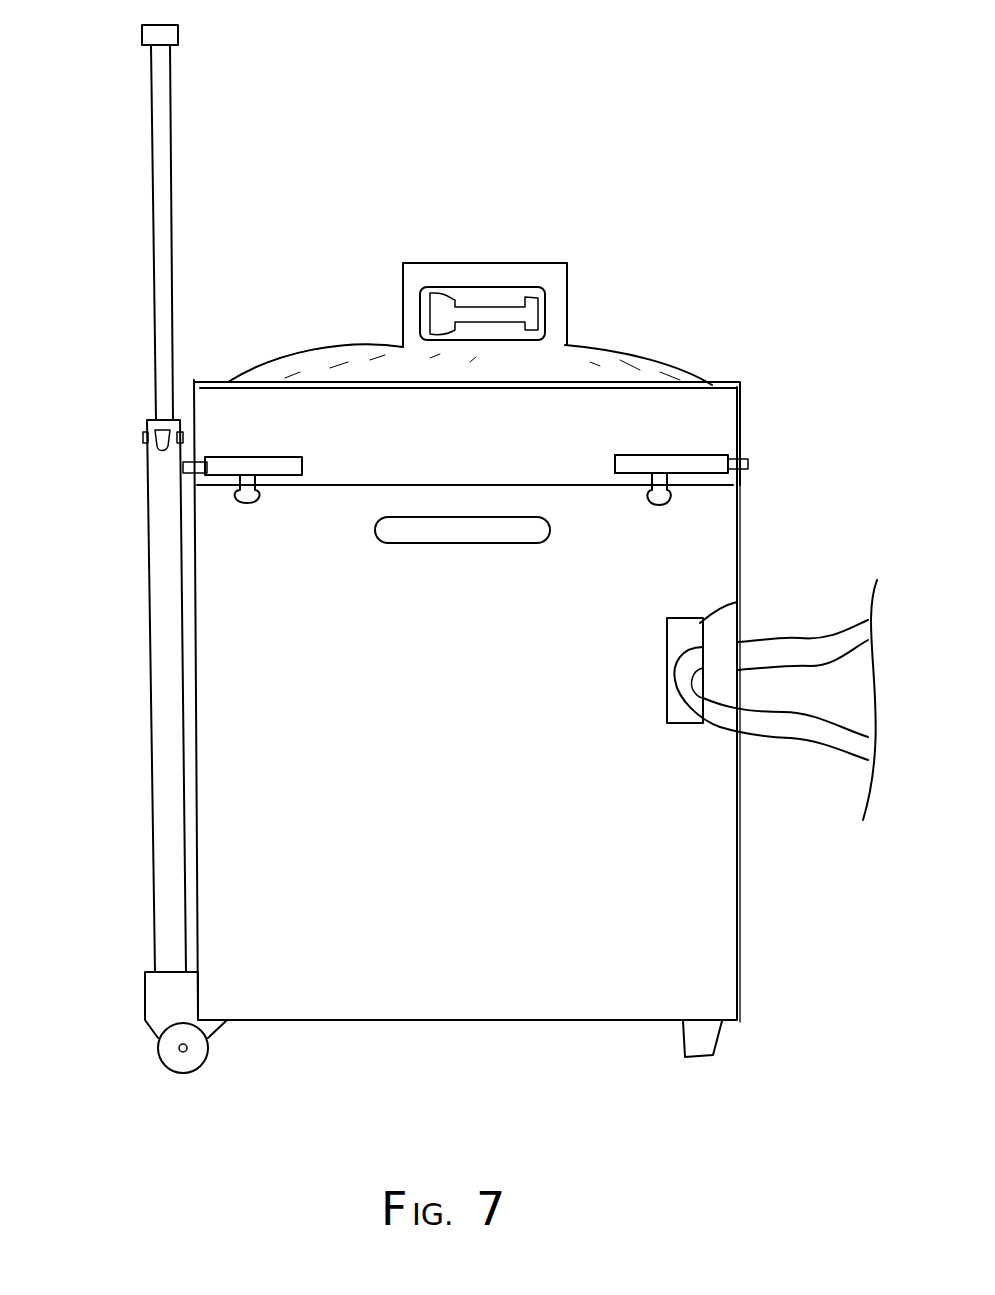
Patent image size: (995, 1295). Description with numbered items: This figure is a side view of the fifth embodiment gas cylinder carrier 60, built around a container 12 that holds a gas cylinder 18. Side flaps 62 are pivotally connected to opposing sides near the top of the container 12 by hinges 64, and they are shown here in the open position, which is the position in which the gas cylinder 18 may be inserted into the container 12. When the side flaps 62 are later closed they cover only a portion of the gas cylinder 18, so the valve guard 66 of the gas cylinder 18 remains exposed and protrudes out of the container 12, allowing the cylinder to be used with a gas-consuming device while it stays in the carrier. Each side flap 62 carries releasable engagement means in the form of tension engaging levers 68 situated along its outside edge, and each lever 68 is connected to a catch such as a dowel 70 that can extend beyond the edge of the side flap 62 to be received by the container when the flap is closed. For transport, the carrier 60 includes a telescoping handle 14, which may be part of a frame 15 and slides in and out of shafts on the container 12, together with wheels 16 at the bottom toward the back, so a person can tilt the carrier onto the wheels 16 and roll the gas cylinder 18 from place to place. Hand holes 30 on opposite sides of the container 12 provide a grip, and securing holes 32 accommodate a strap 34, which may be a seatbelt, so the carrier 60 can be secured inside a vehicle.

The container 12 is at (733, 900).
The telescoping handle 14 is at (148, 680).
The frame 15 is at (132, 965).
The wheels 16 is at (157, 1048).
The gas cylinder 18 is at (647, 362).
The hand holes 30 is at (465, 543).
The securing holes 32 is at (703, 618).
The strap 34 is at (785, 738).
The fifth embodiment gas cylinder carrier 60 is at (676, 182).
The side flaps 62 is at (718, 422).
The hinges 64 is at (367, 383).
The valve guard 66 is at (487, 273).
The tension engaging levers 68 is at (667, 505).
The dowel 70 is at (748, 463).